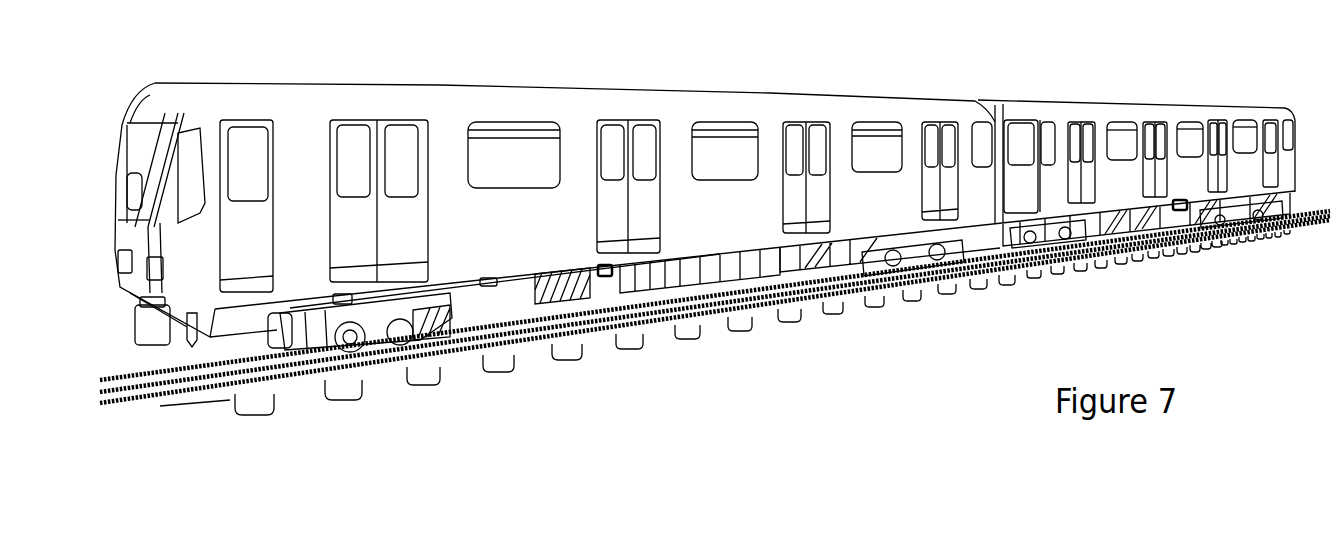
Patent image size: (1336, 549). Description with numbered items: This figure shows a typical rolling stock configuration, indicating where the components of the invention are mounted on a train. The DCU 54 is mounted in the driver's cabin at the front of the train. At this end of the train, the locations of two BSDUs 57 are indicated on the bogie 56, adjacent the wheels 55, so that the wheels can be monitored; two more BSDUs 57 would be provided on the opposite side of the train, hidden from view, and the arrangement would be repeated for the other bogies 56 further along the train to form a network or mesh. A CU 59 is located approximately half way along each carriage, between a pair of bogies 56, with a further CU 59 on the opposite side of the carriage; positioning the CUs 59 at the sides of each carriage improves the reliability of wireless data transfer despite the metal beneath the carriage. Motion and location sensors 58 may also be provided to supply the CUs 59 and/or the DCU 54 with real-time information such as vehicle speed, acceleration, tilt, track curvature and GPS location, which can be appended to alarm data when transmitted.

The DCU 54 is at (127, 122).
The wheels 55 is at (350, 352).
The bogie 56 is at (462, 362).
The BSDU 57 is at (495, 286).
The motion and location sensors 58 is at (612, 276).
The CU 59 is at (660, 318).